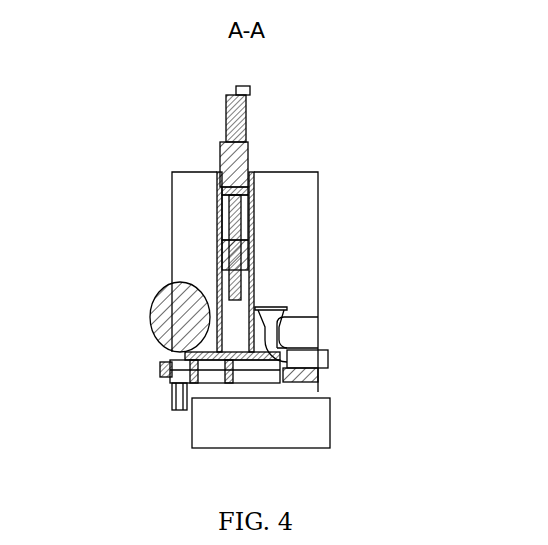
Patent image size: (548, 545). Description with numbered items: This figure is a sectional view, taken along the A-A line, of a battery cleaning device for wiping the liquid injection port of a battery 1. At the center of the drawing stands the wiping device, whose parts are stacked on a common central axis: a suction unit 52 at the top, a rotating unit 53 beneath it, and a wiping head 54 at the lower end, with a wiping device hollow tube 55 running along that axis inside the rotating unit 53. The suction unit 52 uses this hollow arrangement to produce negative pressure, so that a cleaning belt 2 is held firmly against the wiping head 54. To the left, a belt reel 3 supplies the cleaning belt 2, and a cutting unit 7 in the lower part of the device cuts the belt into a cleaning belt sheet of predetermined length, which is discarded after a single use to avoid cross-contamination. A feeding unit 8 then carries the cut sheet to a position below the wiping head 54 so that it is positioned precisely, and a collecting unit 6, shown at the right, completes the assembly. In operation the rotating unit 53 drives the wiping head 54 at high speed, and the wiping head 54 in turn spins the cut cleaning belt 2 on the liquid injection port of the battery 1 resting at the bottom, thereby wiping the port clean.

The battery 1 is at (192, 447).
The cleaning belt 2 is at (160, 357).
The belt reel 3 is at (150, 323).
The collecting unit 6 is at (277, 307).
The cutting unit 7 is at (166, 373).
The feeding unit 8 is at (300, 381).
The suction unit 52 is at (223, 110).
The rotating unit 53 is at (216, 228).
The wiping head 54 is at (236, 300).
The wiping device hollow tube 55 is at (246, 215).